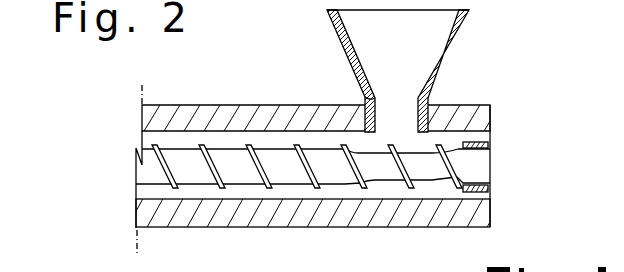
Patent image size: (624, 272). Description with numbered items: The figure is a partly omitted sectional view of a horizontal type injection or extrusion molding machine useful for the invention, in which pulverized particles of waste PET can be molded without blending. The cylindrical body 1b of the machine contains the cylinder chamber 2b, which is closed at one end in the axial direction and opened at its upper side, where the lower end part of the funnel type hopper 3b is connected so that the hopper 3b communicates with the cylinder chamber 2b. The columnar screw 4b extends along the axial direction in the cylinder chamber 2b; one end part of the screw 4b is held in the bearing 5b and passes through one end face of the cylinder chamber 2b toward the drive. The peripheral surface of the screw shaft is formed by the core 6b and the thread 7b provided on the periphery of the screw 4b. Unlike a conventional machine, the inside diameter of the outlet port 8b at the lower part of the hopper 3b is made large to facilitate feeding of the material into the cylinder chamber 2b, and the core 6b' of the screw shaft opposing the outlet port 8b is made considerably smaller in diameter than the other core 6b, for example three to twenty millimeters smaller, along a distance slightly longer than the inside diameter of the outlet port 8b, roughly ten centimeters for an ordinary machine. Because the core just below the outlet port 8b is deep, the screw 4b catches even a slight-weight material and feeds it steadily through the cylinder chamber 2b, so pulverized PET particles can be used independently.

The body 1b is at (175, 113).
The cylinder chamber 2b is at (247, 190).
The hopper 3b is at (456, 38).
The screw 4b is at (195, 163).
The bearing 5b is at (485, 190).
The core 6b is at (255, 210).
The core 6b' is at (408, 210).
The thread 7b is at (250, 150).
The outlet port 8b is at (392, 107).